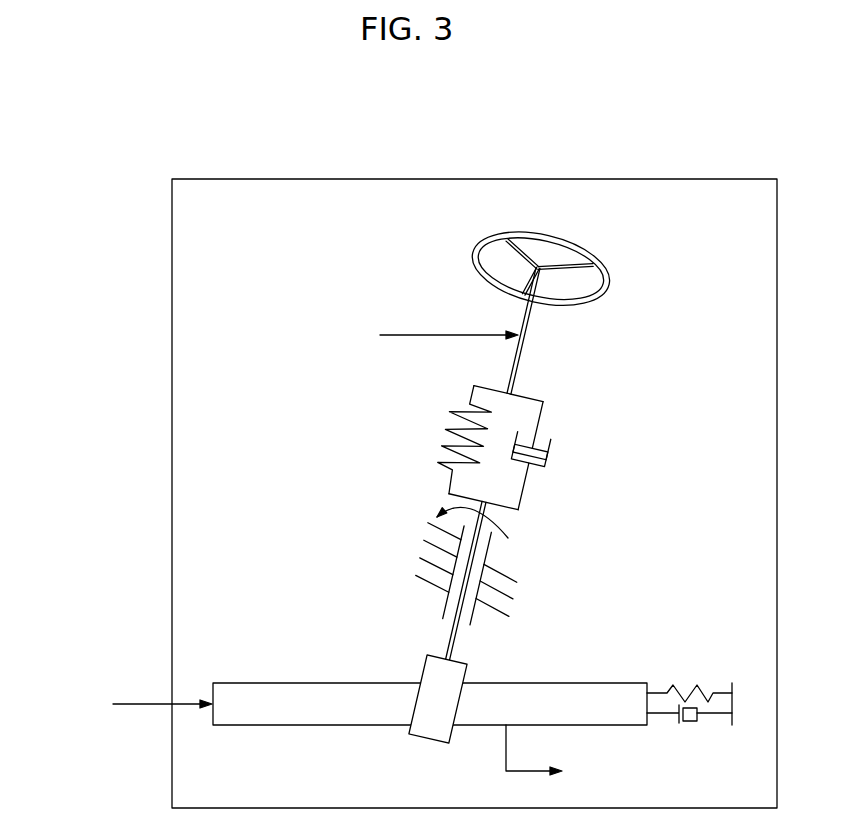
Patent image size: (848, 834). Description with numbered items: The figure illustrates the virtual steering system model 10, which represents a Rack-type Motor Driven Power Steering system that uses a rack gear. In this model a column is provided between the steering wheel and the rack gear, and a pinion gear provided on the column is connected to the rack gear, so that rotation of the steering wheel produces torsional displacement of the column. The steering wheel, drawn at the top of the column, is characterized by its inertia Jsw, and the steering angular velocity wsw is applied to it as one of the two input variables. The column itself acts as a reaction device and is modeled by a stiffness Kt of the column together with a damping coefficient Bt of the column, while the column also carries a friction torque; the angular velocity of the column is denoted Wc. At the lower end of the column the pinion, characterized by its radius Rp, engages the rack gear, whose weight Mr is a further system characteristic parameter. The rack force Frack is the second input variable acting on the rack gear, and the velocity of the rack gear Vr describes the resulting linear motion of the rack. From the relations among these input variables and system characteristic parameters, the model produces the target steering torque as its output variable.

The virtual steering system model 10 is at (279, 179).
The inertia of the steering wheel Jsw is at (541, 269).
The steering angular velocity wsw is at (416, 326).
The stiffness of the column Kt is at (463, 440).
The damping coefficient of the column Bt is at (530, 456).
The angular velocity of the column Wc is at (446, 522).
The radius of the pinion Rp is at (438, 699).
The weight of the rack gear Mr is at (269, 690).
The rack force Frack is at (121, 703).
The velocity of the rack gear Vr is at (552, 758).